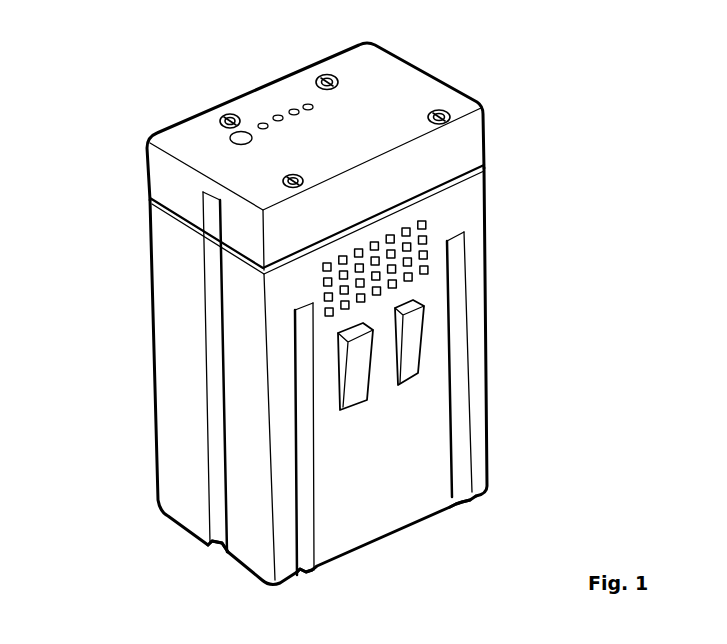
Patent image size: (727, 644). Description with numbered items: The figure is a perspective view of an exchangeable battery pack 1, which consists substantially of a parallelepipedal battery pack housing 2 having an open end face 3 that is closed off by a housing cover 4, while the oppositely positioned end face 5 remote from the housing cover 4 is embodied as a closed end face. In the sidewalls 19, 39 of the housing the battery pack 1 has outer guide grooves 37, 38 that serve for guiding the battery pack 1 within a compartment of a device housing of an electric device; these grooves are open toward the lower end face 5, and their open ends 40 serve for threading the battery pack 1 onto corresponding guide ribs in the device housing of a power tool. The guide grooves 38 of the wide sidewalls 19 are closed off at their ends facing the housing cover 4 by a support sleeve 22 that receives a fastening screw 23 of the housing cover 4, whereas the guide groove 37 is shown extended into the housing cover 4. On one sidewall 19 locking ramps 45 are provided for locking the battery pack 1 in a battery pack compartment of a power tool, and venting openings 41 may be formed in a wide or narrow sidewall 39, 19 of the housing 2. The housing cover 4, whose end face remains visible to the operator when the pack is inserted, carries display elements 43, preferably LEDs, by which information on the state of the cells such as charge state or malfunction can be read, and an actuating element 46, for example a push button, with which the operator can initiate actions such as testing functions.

The battery pack 1 is at (557, 140).
The battery pack housing 2 is at (488, 317).
The open end face 3 is at (172, 205).
The housing cover 4 is at (463, 97).
The end face 5 is at (402, 537).
The sidewall 19 is at (400, 477).
The support sleeve 22 is at (450, 218).
The fastening screw 23 is at (437, 110).
The outer guide groove 37 is at (220, 463).
The outer guide groove 38 is at (303, 392).
The sidewall 39 is at (197, 368).
The open end 40 is at (218, 551).
The venting opening 41 is at (432, 206).
The display element 43 is at (303, 106).
The locking ramp 45 is at (413, 342).
The actuating element 46 is at (231, 134).